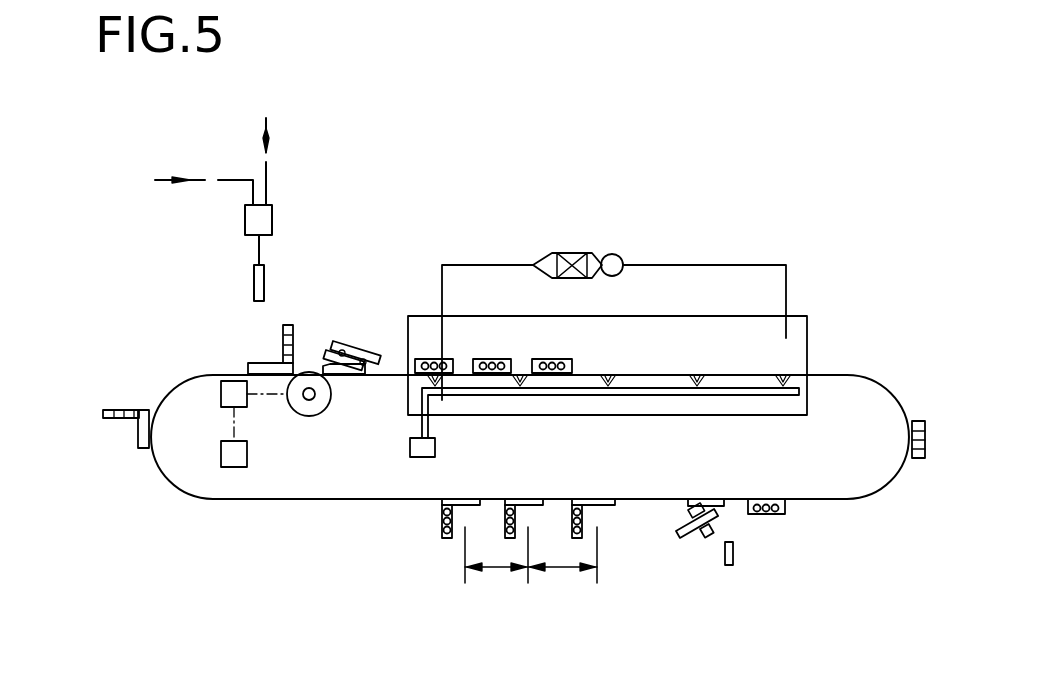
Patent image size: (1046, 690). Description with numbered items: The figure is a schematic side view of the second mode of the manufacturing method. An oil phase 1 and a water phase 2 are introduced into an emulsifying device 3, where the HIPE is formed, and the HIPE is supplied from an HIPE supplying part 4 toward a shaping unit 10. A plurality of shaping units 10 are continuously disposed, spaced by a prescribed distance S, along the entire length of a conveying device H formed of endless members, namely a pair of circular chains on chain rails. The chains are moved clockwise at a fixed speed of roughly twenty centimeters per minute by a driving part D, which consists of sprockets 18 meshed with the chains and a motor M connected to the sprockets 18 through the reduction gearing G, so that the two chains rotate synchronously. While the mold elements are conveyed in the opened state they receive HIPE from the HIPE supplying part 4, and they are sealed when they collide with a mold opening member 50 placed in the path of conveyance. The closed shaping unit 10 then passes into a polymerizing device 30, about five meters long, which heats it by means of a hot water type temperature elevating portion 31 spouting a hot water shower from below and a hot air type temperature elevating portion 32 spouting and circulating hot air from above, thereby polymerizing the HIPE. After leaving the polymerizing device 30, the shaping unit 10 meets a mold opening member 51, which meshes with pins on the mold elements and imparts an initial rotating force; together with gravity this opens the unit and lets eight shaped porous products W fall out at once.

The oil phase 1 is at (272, 123).
The water phase 2 is at (158, 184).
The emulsifying device 3 is at (275, 220).
The HIPE supplying part 4 is at (267, 282).
The shaping unit 10 is at (268, 353).
The sprocket 18 is at (331, 396).
The polymerizing device 30 is at (746, 417).
The hot water type temperature elevating portion 31 is at (645, 398).
The hot air type temperature elevating portion 32 is at (572, 250).
The mold opening member 50 is at (362, 346).
The mold opening member 51 is at (680, 536).
The conveying device H is at (153, 378).
The reduction gearing G is at (234, 411).
The motor M is at (214, 456).
The driving part D is at (268, 420).
The prescribed distance S is at (531, 566).
The shaped porous product W is at (735, 553).